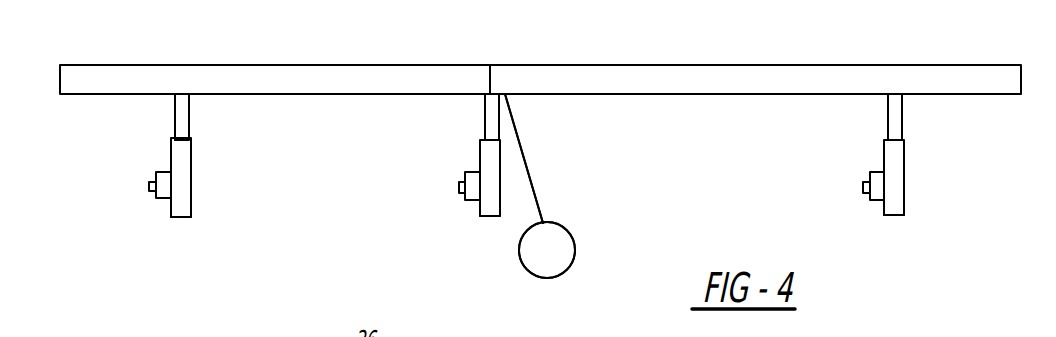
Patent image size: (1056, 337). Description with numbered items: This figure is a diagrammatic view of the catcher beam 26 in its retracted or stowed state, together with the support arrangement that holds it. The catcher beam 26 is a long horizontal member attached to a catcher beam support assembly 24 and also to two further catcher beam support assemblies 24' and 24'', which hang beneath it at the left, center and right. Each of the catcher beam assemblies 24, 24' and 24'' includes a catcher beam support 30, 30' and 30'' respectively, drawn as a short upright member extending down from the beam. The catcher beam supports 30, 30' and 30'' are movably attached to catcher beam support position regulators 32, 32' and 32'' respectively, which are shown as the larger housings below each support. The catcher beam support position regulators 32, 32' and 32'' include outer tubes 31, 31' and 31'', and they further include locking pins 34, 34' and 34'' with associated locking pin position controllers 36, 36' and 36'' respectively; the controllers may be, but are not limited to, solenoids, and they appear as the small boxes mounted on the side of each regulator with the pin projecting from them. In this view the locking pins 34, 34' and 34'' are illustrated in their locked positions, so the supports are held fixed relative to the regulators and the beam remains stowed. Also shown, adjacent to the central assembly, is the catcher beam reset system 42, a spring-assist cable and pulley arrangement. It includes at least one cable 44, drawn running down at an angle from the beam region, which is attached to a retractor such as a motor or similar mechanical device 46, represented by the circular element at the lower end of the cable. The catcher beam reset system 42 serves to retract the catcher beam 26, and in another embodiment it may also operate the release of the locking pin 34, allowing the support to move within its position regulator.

The catcher beam 26 is at (332, 78).
The catcher beam support assembly 24 is at (139, 126).
The catcher beam support 30 is at (231, 117).
The catcher beam support position regulator 32 is at (223, 178).
The outer tube 31 is at (198, 240).
The locking pin 34 is at (128, 213).
The locking pin position controller 36 is at (151, 223).
The catcher beam support assembly 24' is at (440, 120).
The catcher beam support 30' is at (468, 117).
The catcher beam support position regulator 32' is at (441, 178).
The outer tube 31' is at (498, 260).
The locking pin 34' is at (445, 213).
The locking pin position controller 36' is at (470, 233).
The catcher beam reset system 42 is at (557, 168).
The cable 44 is at (522, 143).
The retractor 46 is at (553, 257).
The catcher beam support assembly 24'' is at (840, 123).
The catcher beam support 30'' is at (947, 121).
The catcher beam support position regulator 32'' is at (937, 186).
The outer tube 31'' is at (923, 245).
The locking pin 34'' is at (832, 199).
The locking pin position controller 36'' is at (882, 227).